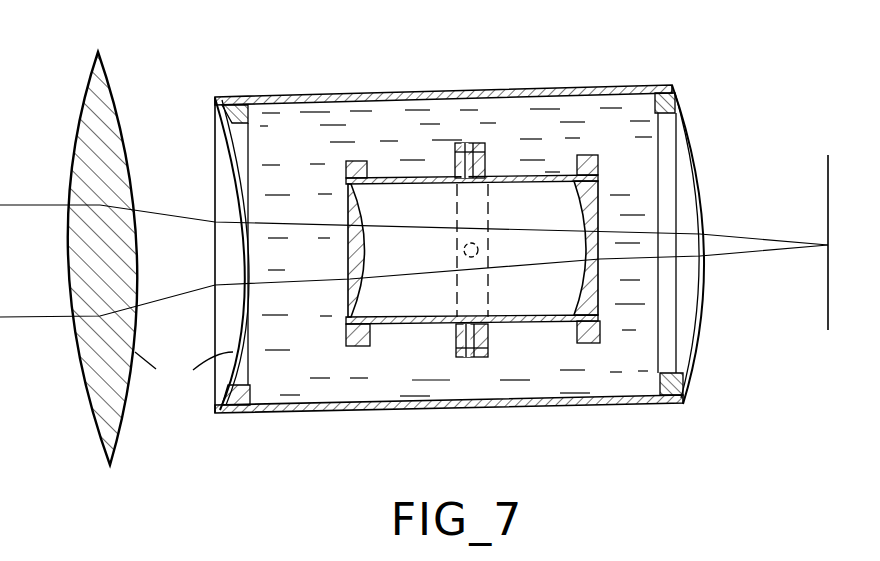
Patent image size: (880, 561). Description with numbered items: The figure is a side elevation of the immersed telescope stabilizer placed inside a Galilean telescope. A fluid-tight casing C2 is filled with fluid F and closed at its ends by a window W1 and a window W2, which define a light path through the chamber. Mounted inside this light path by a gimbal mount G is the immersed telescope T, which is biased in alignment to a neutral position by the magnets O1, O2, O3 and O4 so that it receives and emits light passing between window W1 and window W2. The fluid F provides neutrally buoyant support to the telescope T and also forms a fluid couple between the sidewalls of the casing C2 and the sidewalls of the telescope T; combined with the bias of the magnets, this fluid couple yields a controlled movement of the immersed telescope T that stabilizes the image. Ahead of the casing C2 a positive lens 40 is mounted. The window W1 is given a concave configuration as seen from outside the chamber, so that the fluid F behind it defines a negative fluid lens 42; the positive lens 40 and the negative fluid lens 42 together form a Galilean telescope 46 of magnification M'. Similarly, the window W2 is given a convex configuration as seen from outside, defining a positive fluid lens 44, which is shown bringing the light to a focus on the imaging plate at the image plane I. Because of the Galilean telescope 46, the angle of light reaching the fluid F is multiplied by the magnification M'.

The positive lens 40 is at (91, 418).
The negative fluid lens 42 is at (247, 141).
The positive fluid lens 44 is at (673, 342).
The Galilean telescope 46 is at (184, 373).
The magnification of the Galilean telescope M' is at (165, 424).
The magnet O1 is at (255, 393).
The magnet O2 is at (348, 338).
The magnet O3 is at (595, 156).
The magnet O4 is at (673, 100).
The window W1 is at (227, 377).
The window W2 is at (699, 173).
The fluid F is at (382, 134).
The gimbal mount G is at (484, 145).
The telescope T is at (423, 330).
The casing C2 is at (302, 413).
The image plane I is at (830, 313).